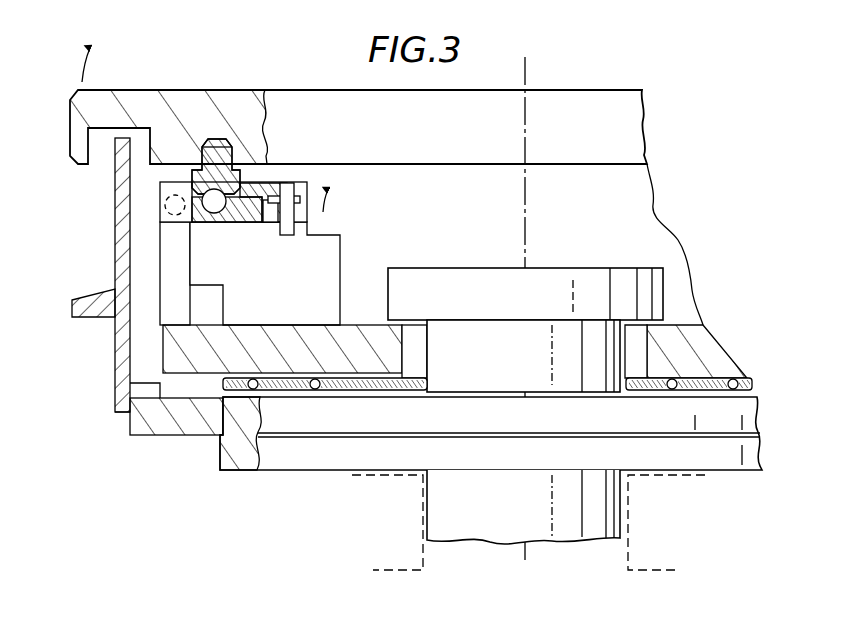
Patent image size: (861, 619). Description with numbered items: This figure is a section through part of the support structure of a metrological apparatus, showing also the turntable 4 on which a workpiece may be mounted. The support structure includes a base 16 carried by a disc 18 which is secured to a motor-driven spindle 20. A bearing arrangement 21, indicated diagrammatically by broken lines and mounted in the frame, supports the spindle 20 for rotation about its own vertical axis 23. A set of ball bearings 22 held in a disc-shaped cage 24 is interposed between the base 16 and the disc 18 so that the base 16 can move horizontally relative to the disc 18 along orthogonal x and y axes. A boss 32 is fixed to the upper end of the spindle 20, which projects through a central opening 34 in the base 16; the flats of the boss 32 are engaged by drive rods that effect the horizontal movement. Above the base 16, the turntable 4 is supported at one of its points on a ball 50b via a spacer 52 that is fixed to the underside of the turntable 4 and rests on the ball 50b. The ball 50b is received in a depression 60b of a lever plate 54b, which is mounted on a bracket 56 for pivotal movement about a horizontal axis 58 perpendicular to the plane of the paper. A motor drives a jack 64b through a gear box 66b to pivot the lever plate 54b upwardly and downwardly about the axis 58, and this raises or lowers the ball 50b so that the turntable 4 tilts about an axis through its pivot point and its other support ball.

The turntable 4 is at (78, 104).
The base 16 is at (262, 331).
The disc 18 is at (314, 418).
The spindle 20 is at (537, 360).
The bearing arrangement 21 is at (413, 545).
The ball bearings 22 is at (672, 380).
The axis 23 is at (528, 78).
The cage 24 is at (707, 388).
The boss 32 is at (493, 278).
The central opening 34 is at (417, 353).
The ball 50b is at (215, 213).
The spacer 52 is at (265, 163).
The lever plate 54b is at (303, 183).
The bracket 56 is at (172, 252).
The pivotal axis 58 is at (165, 210).
The depression 60b is at (238, 213).
The jack 64b is at (295, 230).
The gear box 66b is at (332, 303).